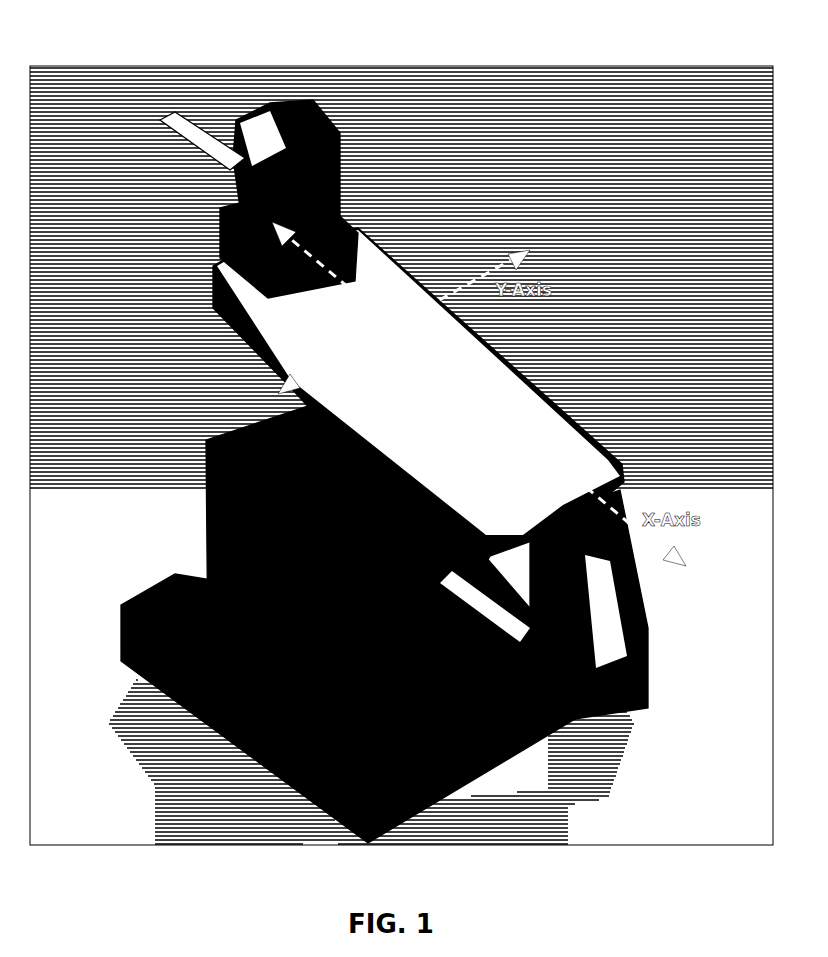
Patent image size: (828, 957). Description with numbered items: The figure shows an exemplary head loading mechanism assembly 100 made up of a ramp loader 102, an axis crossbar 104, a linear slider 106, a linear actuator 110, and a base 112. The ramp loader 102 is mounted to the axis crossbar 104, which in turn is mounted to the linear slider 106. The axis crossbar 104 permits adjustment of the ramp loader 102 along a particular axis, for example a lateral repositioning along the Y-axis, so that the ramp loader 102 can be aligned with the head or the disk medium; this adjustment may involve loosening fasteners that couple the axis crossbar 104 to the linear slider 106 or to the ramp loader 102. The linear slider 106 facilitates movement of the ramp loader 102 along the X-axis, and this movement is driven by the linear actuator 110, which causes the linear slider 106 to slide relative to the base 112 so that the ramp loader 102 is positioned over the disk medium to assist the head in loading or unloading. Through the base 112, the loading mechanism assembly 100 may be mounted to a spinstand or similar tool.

The head loading mechanism assembly 100 is at (400, 44).
The ramp loader 102 is at (182, 137).
The axis crossbar 104 is at (396, 255).
The linear slider 106 is at (380, 477).
The linear actuator 110 is at (300, 453).
The base 112 is at (202, 703).